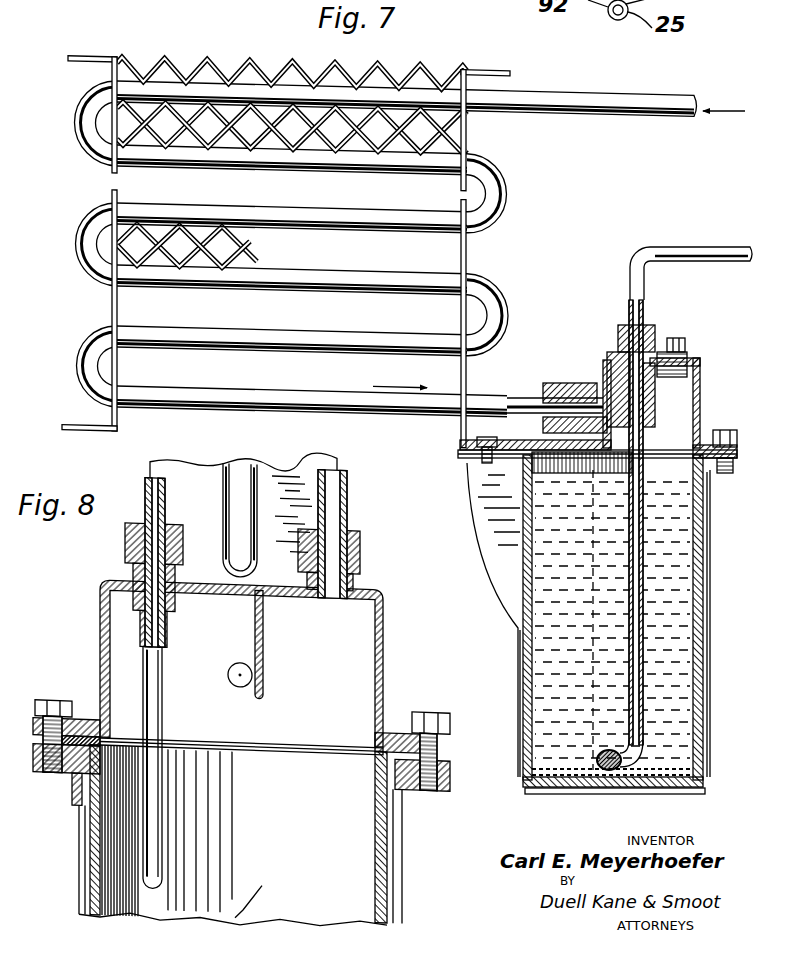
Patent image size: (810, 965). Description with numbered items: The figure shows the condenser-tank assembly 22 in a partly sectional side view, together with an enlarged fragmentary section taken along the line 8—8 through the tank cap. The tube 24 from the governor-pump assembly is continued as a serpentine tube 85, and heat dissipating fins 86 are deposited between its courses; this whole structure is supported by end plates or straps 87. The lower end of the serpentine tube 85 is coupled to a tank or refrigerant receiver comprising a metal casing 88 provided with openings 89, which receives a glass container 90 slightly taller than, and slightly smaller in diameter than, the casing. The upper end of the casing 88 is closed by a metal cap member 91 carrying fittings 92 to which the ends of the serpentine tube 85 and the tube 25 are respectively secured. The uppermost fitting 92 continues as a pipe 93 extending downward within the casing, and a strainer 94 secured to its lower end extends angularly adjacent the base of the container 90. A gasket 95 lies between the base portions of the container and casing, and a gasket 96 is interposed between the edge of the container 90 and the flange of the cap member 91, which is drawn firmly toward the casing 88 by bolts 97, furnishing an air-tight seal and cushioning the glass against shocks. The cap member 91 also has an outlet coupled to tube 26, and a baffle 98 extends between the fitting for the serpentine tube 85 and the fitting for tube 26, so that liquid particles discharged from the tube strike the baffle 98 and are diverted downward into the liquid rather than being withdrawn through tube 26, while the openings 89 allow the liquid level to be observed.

In FIG. 7, the section line 8— 8 is at (672, 230).
In FIG. 7, the condenser-tank assembly 22 is at (100, 164).
In FIG. 8, the condenser-tank assembly 22 is at (310, 449).
In FIG. 7, the tube 24 is at (592, 100).
In FIG. 7, the tube 25 is at (730, 253).
In FIG. 8, the tube 25 is at (161, 491).
In FIG. 8, the tube 26 is at (336, 492).
In FIG. 7, the serpentine tube 85 is at (383, 190).
In FIG. 8, the serpentine tube 85 is at (229, 683).
In FIG. 7, the heat dissipating fins 86 is at (215, 70).
In FIG. 7, the end plates or straps 87 is at (467, 257).
In FIG. 7, the casing 88 is at (528, 648).
In FIG. 8, the casing 88 is at (405, 803).
In FIG. 7, the openings 89 is at (528, 668).
In FIG. 8, the openings 89 is at (398, 855).
In FIG. 7, the container 90 is at (694, 524).
In FIG. 8, the container 90 is at (380, 865).
In FIG. 7, the cap member 91 is at (702, 407).
In FIG. 8, the cap member 91 is at (384, 593).
In FIG. 7, the fittings 92 is at (556, 382).
In FIG. 8, the fittings 92 is at (127, 545).
In FIG. 7, the pipe 93 is at (627, 660).
In FIG. 8, the pipe 93 is at (154, 827).
In FIG. 7, the strainer 94 is at (597, 753).
In FIG. 7, the gasket 95 is at (601, 785).
In FIG. 7, the gasket 96 is at (712, 470).
In FIG. 8, the gasket 96 is at (377, 748).
In FIG. 7, the bolts 97 is at (727, 434).
In FIG. 8, the bolts 97 is at (53, 700).
In FIG. 7, the baffle 98 is at (652, 407).
In FIG. 8, the baffle 98 is at (264, 638).